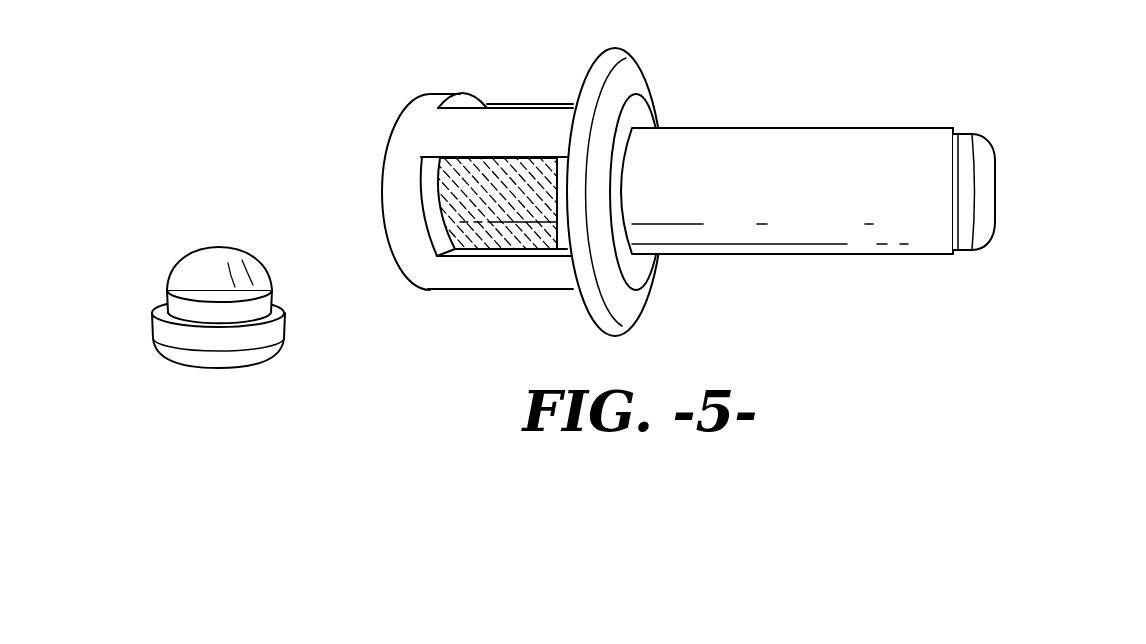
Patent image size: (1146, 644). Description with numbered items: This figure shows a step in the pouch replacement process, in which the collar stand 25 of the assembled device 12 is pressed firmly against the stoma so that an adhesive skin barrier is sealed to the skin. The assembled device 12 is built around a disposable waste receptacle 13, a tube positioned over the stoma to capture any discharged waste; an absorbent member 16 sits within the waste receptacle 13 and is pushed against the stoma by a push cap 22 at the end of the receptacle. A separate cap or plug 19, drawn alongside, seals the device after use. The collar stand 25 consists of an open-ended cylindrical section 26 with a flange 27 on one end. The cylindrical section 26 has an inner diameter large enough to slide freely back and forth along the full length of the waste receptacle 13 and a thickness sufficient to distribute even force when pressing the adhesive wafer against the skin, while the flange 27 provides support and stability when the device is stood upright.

The assembled device 12 is at (1026, 97).
The waste receptacle 13 is at (778, 150).
The absorbent member 16 is at (500, 214).
The cap or plug 19 is at (216, 377).
The push cap 22 is at (983, 217).
The collar stand 25 is at (443, 83).
The cylindrical section 26 is at (403, 210).
The flange 27 is at (632, 80).